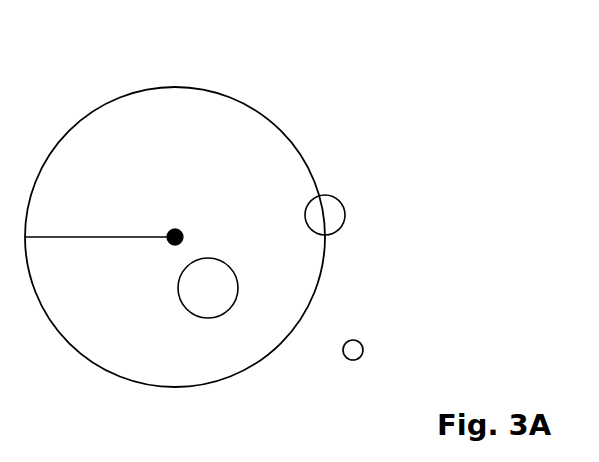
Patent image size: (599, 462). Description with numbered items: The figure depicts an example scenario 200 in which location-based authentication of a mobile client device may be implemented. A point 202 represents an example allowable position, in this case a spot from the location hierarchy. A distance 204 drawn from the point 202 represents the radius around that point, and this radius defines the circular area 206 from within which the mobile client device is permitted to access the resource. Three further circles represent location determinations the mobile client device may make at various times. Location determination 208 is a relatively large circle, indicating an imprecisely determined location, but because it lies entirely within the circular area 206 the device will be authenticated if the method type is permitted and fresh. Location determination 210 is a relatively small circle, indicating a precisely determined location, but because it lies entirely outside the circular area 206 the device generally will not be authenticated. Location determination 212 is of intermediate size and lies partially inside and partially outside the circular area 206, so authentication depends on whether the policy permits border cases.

The example scenario 200 is at (468, 68).
The point 202 is at (181, 231).
The distance 204 is at (65, 237).
The circular area 206 is at (285, 133).
The location determination 208 is at (233, 265).
The location determination 210 is at (360, 343).
The location determination 212 is at (338, 199).